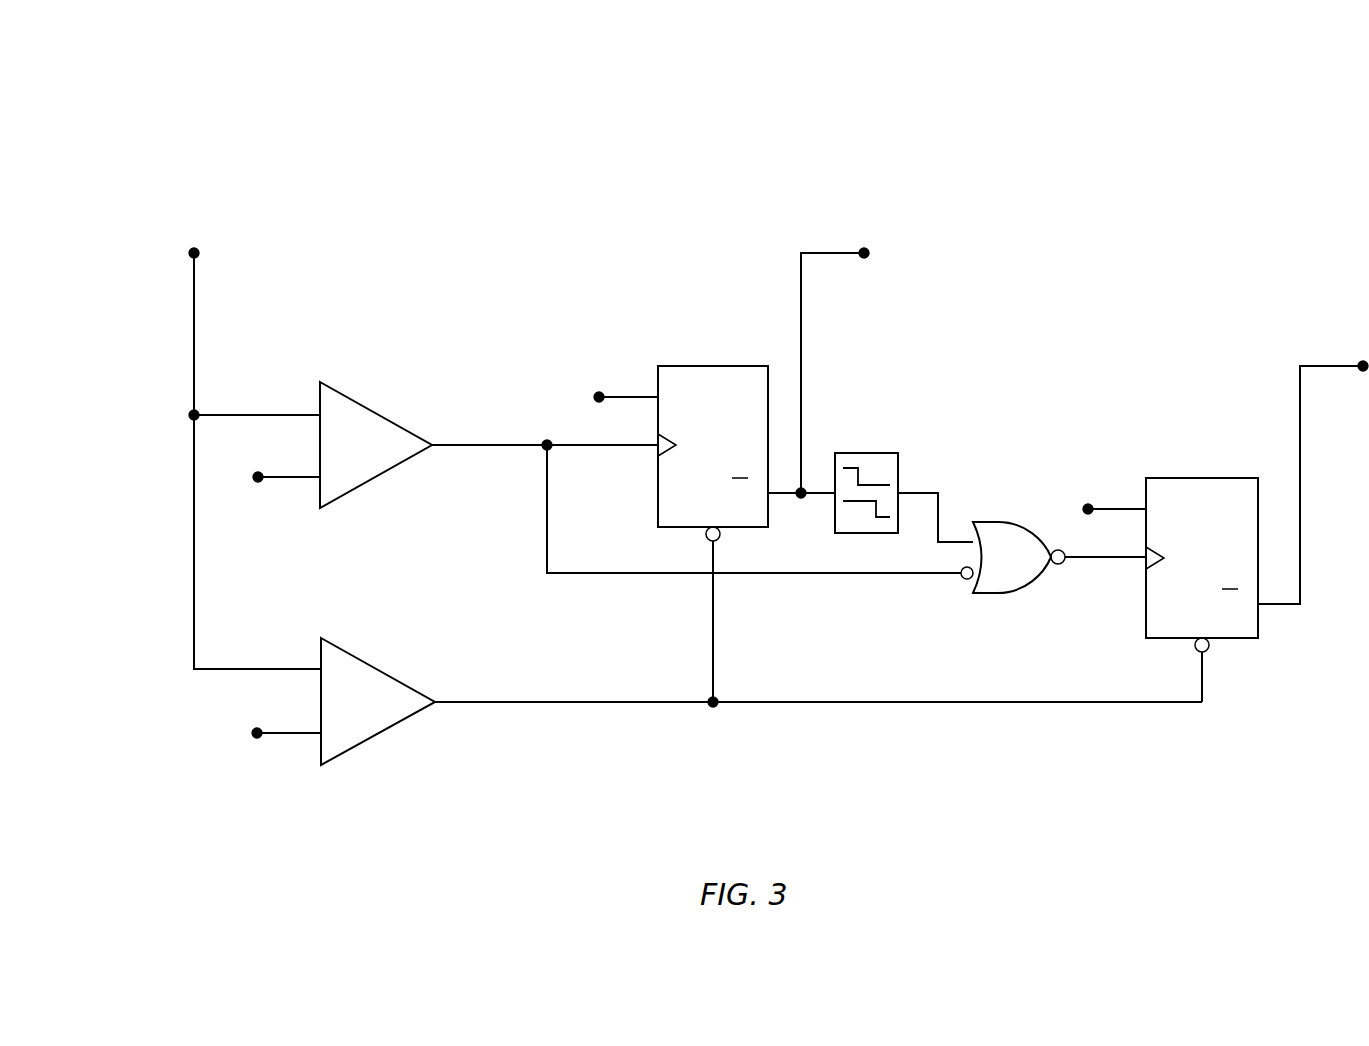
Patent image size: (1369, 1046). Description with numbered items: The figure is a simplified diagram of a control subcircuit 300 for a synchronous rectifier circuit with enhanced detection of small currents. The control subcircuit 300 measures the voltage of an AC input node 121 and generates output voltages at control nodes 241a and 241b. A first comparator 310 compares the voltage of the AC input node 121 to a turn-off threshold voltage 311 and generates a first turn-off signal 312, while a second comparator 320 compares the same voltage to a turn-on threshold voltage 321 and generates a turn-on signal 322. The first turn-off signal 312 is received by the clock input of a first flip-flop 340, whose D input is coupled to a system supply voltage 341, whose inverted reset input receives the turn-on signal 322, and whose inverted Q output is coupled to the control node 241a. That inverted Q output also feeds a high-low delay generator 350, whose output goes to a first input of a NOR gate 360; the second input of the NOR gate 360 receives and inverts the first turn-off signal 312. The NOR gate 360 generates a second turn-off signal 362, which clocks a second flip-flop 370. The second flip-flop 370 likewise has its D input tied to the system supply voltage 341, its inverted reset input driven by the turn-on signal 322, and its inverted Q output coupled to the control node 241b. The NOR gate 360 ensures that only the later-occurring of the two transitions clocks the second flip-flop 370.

The control subcircuit 300 is at (184, 72).
The AC input node 121 is at (196, 236).
The first comparator 310 is at (348, 381).
The turn-off threshold voltage 311 is at (291, 467).
The first turn-off signal 312 is at (532, 427).
The first flip-flop 340 is at (706, 349).
The system supply voltage 341 is at (628, 381).
The control node 241a is at (838, 237).
The high-low delay generator 350 is at (884, 445).
The NOR gate 360 is at (1028, 512).
The second turn-off signal 362 is at (1121, 578).
The second flip-flop 370 is at (1218, 461).
The control node 241b is at (1333, 350).
The second comparator 320 is at (350, 636).
The turn-on threshold voltage 321 is at (276, 713).
The turn-on signal 322 is at (596, 685).